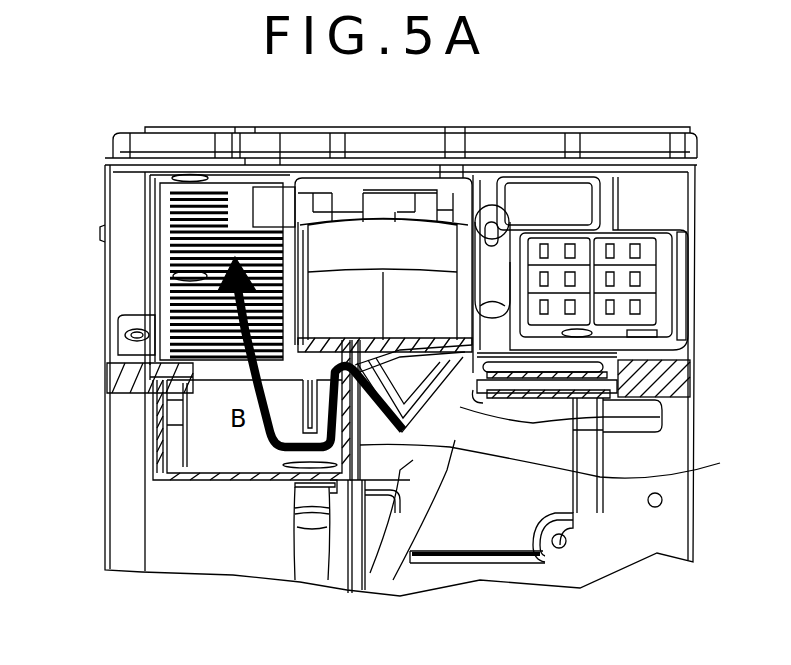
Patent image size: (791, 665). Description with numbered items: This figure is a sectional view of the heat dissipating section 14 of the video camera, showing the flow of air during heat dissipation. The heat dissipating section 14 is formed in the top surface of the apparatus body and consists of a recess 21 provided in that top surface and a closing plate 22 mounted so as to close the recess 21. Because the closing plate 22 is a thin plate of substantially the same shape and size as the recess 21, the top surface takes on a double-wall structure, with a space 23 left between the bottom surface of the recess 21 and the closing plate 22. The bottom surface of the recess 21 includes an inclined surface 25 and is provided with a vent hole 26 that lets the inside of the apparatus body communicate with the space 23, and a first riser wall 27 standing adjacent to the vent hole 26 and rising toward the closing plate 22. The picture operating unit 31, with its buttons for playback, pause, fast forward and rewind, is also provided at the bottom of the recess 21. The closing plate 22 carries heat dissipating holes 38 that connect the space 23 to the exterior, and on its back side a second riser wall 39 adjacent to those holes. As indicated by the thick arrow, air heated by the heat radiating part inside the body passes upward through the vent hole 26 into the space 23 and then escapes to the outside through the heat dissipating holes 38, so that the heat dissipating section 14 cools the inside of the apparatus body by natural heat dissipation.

The heat dissipating section 14 is at (440, 236).
The recess 21 is at (193, 450).
The closing plate 22 is at (370, 247).
The space 23 is at (213, 428).
The inclined surface 25 is at (243, 445).
The vent hole 26 is at (660, 421).
The first riser wall 27 is at (600, 477).
The picture operating unit 31 is at (627, 286).
The heat dissipating holes 38 is at (185, 400).
The second riser wall 39 is at (330, 340).